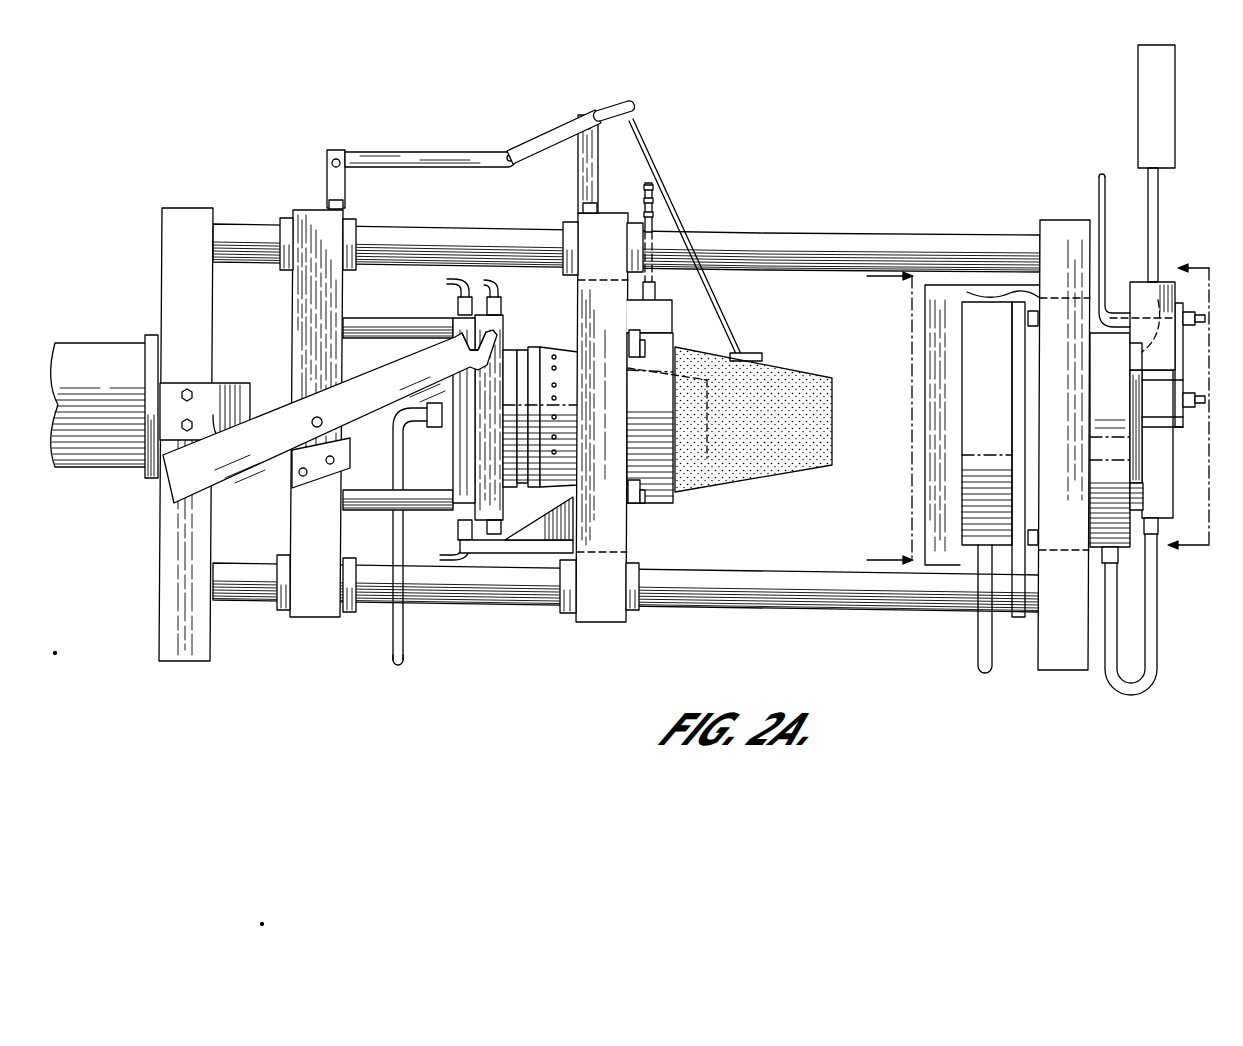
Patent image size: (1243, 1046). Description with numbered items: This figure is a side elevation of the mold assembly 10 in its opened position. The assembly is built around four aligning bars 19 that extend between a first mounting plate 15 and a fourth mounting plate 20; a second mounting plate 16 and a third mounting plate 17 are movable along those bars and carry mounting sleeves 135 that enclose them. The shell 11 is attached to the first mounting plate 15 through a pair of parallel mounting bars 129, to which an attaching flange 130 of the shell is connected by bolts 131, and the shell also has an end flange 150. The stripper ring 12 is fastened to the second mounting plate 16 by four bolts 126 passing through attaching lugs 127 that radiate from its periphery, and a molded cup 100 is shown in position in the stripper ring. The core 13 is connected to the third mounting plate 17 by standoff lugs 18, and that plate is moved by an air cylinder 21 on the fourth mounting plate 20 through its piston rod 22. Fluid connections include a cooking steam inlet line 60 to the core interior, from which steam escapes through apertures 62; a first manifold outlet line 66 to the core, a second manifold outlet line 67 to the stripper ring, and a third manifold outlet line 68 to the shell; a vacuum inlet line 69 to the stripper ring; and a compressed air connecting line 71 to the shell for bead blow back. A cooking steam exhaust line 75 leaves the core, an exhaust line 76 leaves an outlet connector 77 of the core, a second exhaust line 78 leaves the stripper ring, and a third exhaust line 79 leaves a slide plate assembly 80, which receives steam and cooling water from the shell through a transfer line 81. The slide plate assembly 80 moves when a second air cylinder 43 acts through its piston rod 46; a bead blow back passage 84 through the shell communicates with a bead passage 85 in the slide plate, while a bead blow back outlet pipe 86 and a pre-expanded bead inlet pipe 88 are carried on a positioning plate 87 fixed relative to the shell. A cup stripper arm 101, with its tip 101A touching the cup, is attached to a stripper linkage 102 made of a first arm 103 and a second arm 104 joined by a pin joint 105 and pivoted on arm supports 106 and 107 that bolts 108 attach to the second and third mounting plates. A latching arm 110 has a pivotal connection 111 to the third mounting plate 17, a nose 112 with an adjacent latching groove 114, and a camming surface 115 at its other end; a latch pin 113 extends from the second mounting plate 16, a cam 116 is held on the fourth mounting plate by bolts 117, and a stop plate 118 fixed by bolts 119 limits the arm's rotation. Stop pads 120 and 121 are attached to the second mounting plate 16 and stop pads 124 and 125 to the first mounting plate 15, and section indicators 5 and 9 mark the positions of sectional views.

The mold assembly 10 is at (866, 200).
The shell portion 11 is at (955, 356).
The stripper ring 12 is at (680, 503).
The core 13 is at (527, 496).
The first mounting plate 15 is at (1060, 220).
The second mounting plate 16 is at (604, 230).
The third mounting plate 17 is at (316, 210).
The standoff lugs 18 is at (370, 318).
The aligning bars 19 is at (915, 240).
The fourth mounting plate 20 is at (192, 206).
The air cylinder 21 is at (110, 343).
The piston rod 22 is at (250, 395).
The second air cylinder 43 is at (1138, 62).
The piston rod 46 is at (1160, 200).
The cooking steam inlet line 60 is at (450, 282).
The apertures 62 is at (556, 372).
The first manifold outlet line 66 is at (500, 292).
The second manifold outlet line 67 is at (655, 185).
The third manifold outlet line 68 is at (992, 660).
The vacuum inlet line 69 is at (655, 210).
The compressed air connecting line 71 is at (1106, 205).
The cooking steam exhaust line 75 is at (450, 545).
The first high and low pressure steam and cooling water exhaust line 76 is at (390, 656).
The outlet connector 77 is at (435, 427).
The second exhaust line 78 is at (657, 224).
The third exhaust line 79 is at (1160, 577).
The slide plate assembly 80 is at (1172, 482).
The high and low pressure steam and cooling water transfer line 81 is at (1150, 690).
The bead blow back passage 84 is at (1122, 305).
The bead passage 85 is at (1140, 352).
The bead blow back outlet pipe 86 is at (1205, 318).
The positioning plate 87 is at (1181, 305).
The pre-expanded bead inlet pipe 88 is at (1205, 400).
The molded cup 100 is at (770, 480).
The cup stripper arm 101 is at (704, 280).
The pad 101A is at (748, 356).
The stripper linkage 102 is at (513, 144).
The first arm 103 is at (606, 108).
The second arm 104 is at (405, 152).
The pin joint 105 is at (510, 165).
The arm support 106 is at (572, 140).
The arm support 107 is at (345, 182).
The bolts 108 is at (343, 204).
The latching arm 110 is at (172, 492).
The pivotal connection 111 is at (312, 424).
The nose 112 is at (503, 333).
The latch pin 113 is at (602, 421).
The latching groove 114 is at (465, 346).
The camming surface 115 is at (150, 480).
The cam 116 is at (225, 383).
The bolts 117 is at (181, 425).
The stop plate 118 is at (293, 472).
The bolts 119 is at (330, 465).
The stop pad 120 is at (480, 556).
The stop pad 121 is at (532, 542).
The stop pad 124 is at (928, 318).
The stop pad 125 is at (1035, 296).
The bolts 126 is at (631, 335).
The attaching lugs 127 is at (642, 345).
The mounting bars 129 is at (1018, 610).
The attaching flange 130 is at (972, 442).
The bolts 131 is at (1040, 318).
The mounting sleeves 135 is at (357, 235).
The end flange 150 is at (1118, 562).
The section line 5 is at (881, 420).
The section line 9 is at (1188, 406).